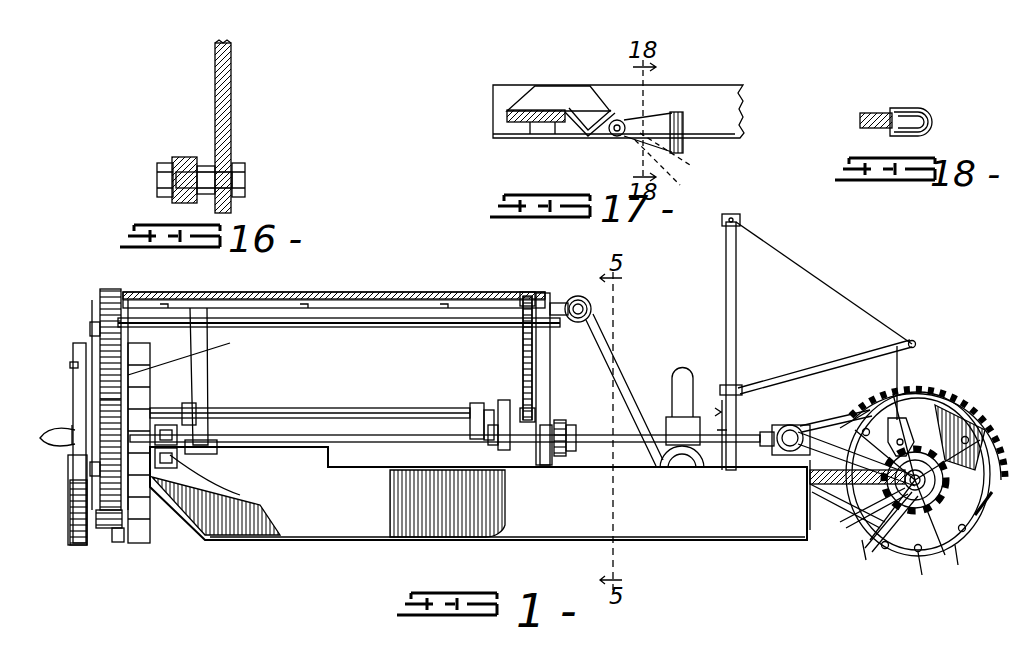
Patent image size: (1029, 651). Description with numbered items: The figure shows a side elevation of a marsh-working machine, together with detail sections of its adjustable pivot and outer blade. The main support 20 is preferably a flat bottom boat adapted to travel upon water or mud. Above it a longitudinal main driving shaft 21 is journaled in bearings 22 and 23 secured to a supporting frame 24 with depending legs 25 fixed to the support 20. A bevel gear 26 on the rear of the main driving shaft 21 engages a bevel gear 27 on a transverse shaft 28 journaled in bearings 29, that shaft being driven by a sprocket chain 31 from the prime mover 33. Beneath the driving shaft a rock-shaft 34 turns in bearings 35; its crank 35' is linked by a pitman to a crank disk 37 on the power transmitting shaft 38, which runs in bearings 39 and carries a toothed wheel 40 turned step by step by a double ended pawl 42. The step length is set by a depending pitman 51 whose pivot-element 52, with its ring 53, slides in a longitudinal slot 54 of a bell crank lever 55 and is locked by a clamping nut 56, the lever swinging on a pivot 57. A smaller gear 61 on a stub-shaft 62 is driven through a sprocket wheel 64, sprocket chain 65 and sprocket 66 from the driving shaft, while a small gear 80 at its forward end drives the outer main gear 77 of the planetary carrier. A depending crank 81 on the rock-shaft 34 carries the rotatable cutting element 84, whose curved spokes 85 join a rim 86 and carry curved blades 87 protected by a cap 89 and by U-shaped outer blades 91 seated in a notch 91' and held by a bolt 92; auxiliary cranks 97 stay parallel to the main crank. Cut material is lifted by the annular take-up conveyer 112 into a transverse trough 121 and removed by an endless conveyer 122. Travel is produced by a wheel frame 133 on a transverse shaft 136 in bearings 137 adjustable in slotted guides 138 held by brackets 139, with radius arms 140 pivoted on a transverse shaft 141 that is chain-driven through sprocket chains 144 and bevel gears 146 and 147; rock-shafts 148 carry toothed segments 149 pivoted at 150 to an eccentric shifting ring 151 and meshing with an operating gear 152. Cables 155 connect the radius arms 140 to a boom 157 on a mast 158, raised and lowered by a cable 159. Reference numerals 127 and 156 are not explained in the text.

In FIG. 1, the main support 20 is at (352, 526).
In FIG. 1, the main driving shaft 21 is at (390, 297).
In FIG. 1, the bearing 22 is at (546, 294).
In FIG. 1, the bearing 23 is at (222, 292).
In FIG. 1, the supporting frame 24 is at (360, 320).
In FIG. 1, the depending legs 25 is at (210, 360).
In FIG. 1, the bevel gear 26 is at (577, 298).
In FIG. 1, the bevel gear 27 is at (592, 308).
In FIG. 1, the transverse shaft 28 is at (590, 302).
In FIG. 1, the bearings 29 is at (590, 314).
In FIG. 1, the sprocket chain 31 is at (640, 372).
In FIG. 1, the prime mover 33 is at (683, 372).
In FIG. 1, the rock-shaft 34 is at (380, 408).
In FIG. 1, the bearings 35 is at (333, 403).
In FIG. 1, the crank 35' is at (454, 442).
In FIG. 1, the crank disk 37 is at (111, 529).
In FIG. 1, the power transmitting shaft 38 is at (640, 466).
In FIG. 1, the bearings 39 is at (757, 430).
In FIG. 1, the toothed wheel 40 is at (541, 455).
In FIG. 1, the pawl 42 is at (578, 432).
In FIG. 16, the depending pitman 51 is at (231, 90).
In FIG. 16, the pivot-element 52 is at (245, 178).
In FIG. 16, the ring 53 is at (212, 168).
In FIG. 16, the longitudinal slot 54 is at (180, 197).
In FIG. 16, the bell crank lever 55 is at (178, 158).
In FIG. 16, the clamping nut 56 is at (157, 180).
In FIG. 1, the pivot 57 is at (465, 412).
In FIG. 1, the smaller gear 61 is at (569, 425).
In FIG. 1, the stub-shaft 62 is at (556, 420).
In FIG. 1, the sprocket wheel 64 is at (520, 412).
In FIG. 1, the sprocket chain 65 is at (522, 366).
In FIG. 1, the sprocket 66 is at (520, 296).
In FIG. 1, the outer main gear 77 is at (72, 510).
In FIG. 1, the small gear 80 is at (120, 282).
In FIG. 1, the depending crank 81 is at (96, 420).
In FIG. 1, the rotatable cutting element 84 is at (62, 511).
In FIG. 17, the curved spokes 85 is at (542, 100).
In FIG. 17, the rim 86 is at (702, 97).
In FIG. 18, the rim 86 is at (862, 123).
In FIG. 1, the rim 86 is at (73, 352).
In FIG. 17, the curved blades 87 is at (550, 130).
In FIG. 1, the cap 89 is at (50, 436).
In FIG. 17, the outer blades 91 is at (671, 146).
In FIG. 18, the outer blades 91 is at (917, 103).
In FIG. 1, the outer blades 91 is at (51, 359).
In FIG. 17, the notch 91' is at (677, 168).
In FIG. 18, the notch 91' is at (959, 123).
In FIG. 17, the bolt 92 is at (613, 136).
In FIG. 1, the auxiliary cranks 97 is at (90, 470).
In FIG. 1, the annular take-up conveyer 112 is at (154, 546).
In FIG. 1, the transverse trough 121 is at (240, 485).
In FIG. 1, the endless conveyer 122 is at (178, 438).
In FIG. 1, the link 127 is at (200, 350).
In FIG. 1, the wheel frame 133 is at (888, 570).
In FIG. 1, the transverse shaft 136 is at (962, 410).
In FIG. 1, the bearings 137 is at (945, 528).
In FIG. 1, the slotted guides 138 is at (866, 545).
In FIG. 1, the brackets 139 is at (808, 515).
In FIG. 1, the radius arms 140 is at (842, 418).
In FIG. 1, the transverse shaft 141 is at (790, 452).
In FIG. 1, the sprocket chains 144 is at (800, 425).
In FIG. 1, the bevel gear 146 is at (778, 456).
In FIG. 1, the bevel gear 147 is at (790, 382).
In FIG. 1, the rock-shafts 148 is at (920, 556).
In FIG. 1, the toothed segments 149 is at (985, 522).
In FIG. 1, the pivotal connection 150 is at (928, 440).
In FIG. 1, the shifting ring 151 is at (950, 445).
In FIG. 1, the operating gear 152 is at (978, 508).
In FIG. 1, the cables 155 is at (906, 418).
In FIG. 1, the rod 156 is at (900, 346).
In FIG. 1, the boom 157 is at (768, 380).
In FIG. 1, the mast 158 is at (736, 320).
In FIG. 1, the cable 159 is at (848, 316).